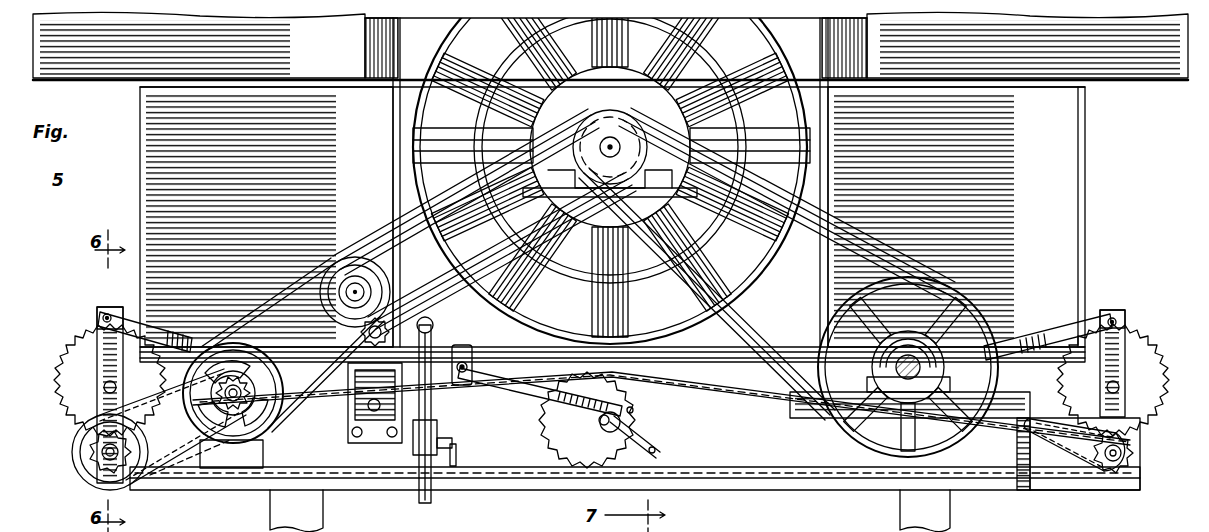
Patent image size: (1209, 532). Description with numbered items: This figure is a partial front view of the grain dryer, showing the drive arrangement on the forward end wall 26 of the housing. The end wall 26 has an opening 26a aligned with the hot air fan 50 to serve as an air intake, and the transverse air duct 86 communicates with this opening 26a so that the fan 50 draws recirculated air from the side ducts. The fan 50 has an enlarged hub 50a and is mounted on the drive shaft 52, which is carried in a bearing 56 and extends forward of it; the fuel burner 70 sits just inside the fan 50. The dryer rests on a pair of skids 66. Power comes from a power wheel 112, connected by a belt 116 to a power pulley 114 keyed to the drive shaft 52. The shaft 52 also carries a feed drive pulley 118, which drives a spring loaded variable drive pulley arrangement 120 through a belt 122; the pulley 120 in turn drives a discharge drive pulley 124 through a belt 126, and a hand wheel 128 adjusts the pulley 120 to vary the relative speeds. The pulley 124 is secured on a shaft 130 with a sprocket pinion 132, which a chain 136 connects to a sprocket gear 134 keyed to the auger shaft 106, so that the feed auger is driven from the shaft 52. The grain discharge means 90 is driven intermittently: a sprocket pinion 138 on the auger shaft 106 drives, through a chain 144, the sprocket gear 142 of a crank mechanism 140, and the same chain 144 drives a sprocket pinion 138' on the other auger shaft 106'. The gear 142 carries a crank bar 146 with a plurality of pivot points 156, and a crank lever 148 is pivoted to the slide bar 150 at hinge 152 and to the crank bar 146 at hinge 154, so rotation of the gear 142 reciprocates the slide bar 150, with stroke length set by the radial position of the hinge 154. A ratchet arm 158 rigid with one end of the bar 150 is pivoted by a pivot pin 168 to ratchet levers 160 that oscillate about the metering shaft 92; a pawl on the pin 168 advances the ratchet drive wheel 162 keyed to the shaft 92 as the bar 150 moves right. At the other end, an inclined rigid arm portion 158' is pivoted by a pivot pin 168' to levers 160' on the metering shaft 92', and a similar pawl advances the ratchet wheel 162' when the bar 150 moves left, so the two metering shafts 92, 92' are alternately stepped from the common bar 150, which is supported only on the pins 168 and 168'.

The forward end wall 26 is at (140, 185).
The opening 26a is at (750, 282).
The hot air fan 50 is at (812, 142).
The enlarged hub 50a is at (530, 128).
The drive shaft 52 is at (603, 135).
The bearing 56 is at (578, 148).
The skids 66 is at (323, 505).
The fuel burner 70 is at (574, 290).
The transverse air duct 86 is at (330, 85).
The grain discharge means 90 is at (1021, 524).
The metering shaft 92 is at (75, 395).
The metering shaft 92' is at (1143, 363).
The auger shaft 106 is at (75, 452).
The auger shaft 106' is at (1139, 453).
The power wheel 112 is at (958, 292).
The power pulley 114 is at (626, 130).
The belt 116 is at (853, 232).
The feed drive pulley 118 is at (614, 130).
The variable drive pulley arrangement 120 is at (348, 258).
The belt 122 is at (372, 240).
The discharge drive pulley 124 is at (243, 358).
The belt 126 is at (315, 283).
The hand wheel 128 is at (392, 318).
The shaft 130 is at (256, 410).
The sprocket pinion 132 is at (250, 425).
The sprocket gear 134 is at (175, 472).
The chain 136 is at (90, 482).
The sprocket pinion 138 is at (159, 441).
The sprocket pinion 138' is at (1078, 467).
The crank mechanism 140 is at (508, 433).
The sprocket gear 142 is at (552, 438).
The chain 144 is at (725, 478).
The crank bar 146 is at (640, 417).
The crank lever 148 is at (530, 402).
The slide bar 150 is at (492, 346).
The hinge 152 is at (457, 385).
The hinge 154 is at (648, 435).
The pivot points 156 is at (640, 408).
The ratchet arm 158 is at (146, 319).
The inclined rigid arm portion 158' is at (1048, 325).
The ratchet levers 160 is at (103, 297).
The levers 160' is at (1133, 296).
The ratchet drive wheel 162 is at (90, 380).
The ratchet wheel 162' is at (1128, 380).
The pivot pin 168 is at (77, 309).
The pivot pin 168' is at (1141, 311).